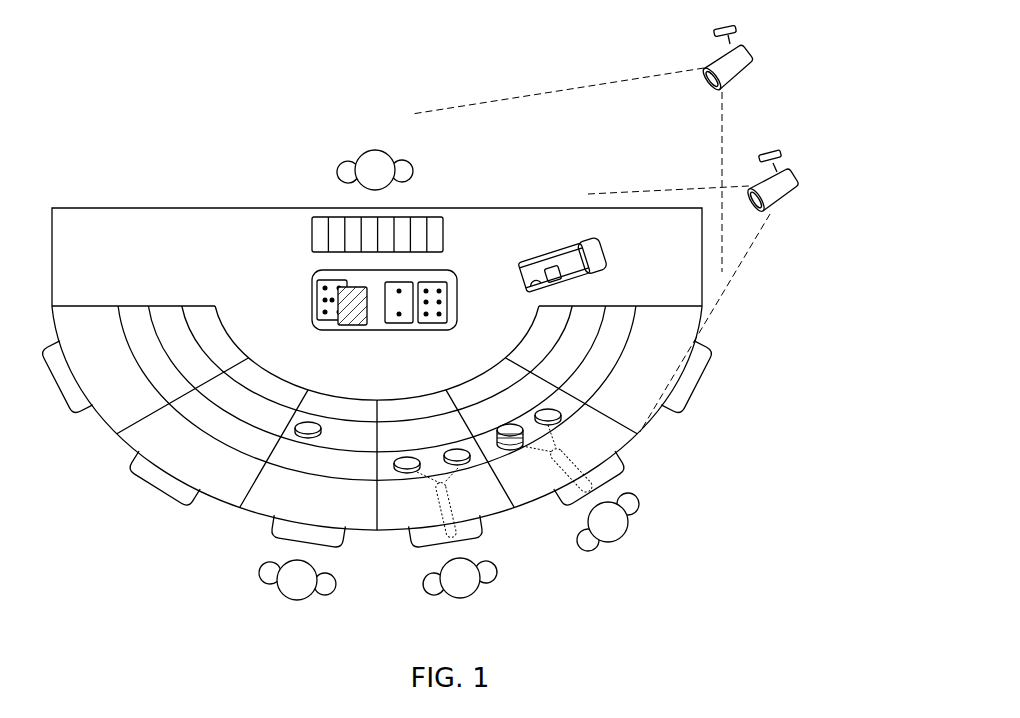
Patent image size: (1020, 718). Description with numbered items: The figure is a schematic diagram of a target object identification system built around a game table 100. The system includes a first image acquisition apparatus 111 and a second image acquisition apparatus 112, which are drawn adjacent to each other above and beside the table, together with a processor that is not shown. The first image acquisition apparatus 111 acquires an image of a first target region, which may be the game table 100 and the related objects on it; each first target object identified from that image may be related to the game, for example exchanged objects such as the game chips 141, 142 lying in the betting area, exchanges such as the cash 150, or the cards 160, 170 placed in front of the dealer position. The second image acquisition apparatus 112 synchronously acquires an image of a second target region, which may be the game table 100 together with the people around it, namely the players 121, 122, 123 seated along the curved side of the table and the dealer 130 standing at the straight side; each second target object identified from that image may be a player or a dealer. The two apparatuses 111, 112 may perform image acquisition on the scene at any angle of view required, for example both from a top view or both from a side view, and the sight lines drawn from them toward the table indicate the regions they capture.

The game table 100 is at (703, 252).
The first image acquisition apparatus 111 is at (790, 200).
The second image acquisition apparatus 112 is at (742, 75).
The player 121 is at (274, 581).
The player 122 is at (484, 581).
The player 123 is at (588, 546).
The dealer 130 is at (391, 151).
The game chips 141 is at (463, 463).
The game chips 142 is at (558, 418).
The cash 150 is at (575, 260).
The cards 160 is at (312, 287).
The cards 170 is at (322, 230).